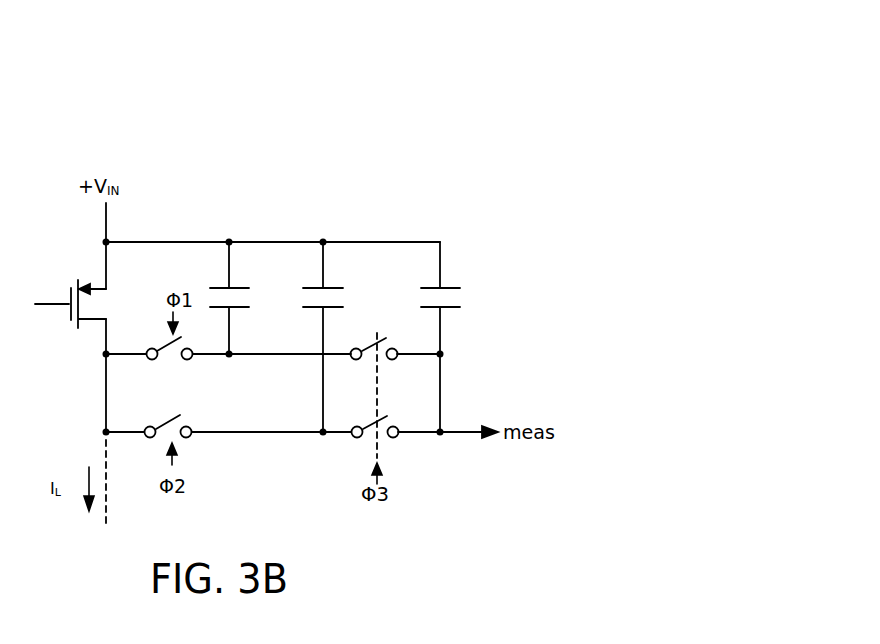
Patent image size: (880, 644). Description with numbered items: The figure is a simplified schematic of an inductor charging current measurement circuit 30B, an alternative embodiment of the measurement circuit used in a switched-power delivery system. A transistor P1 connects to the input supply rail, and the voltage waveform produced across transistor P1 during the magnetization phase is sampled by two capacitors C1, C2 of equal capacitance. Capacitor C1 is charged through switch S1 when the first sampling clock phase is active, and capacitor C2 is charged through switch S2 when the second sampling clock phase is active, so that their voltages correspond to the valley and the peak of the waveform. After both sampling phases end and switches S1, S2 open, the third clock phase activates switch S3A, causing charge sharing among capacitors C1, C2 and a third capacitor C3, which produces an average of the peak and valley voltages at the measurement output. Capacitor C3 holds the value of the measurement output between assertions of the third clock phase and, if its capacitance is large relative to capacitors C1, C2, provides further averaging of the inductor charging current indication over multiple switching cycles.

The inductor charging current measurement circuit 30B is at (405, 157).
The transistor P1 is at (84, 304).
The capacitor C1 is at (245, 298).
The capacitor C2 is at (338, 276).
The third capacitor C3 is at (458, 276).
The switch S1 is at (170, 361).
The switch S2 is at (168, 414).
The switch S3A is at (390, 388).